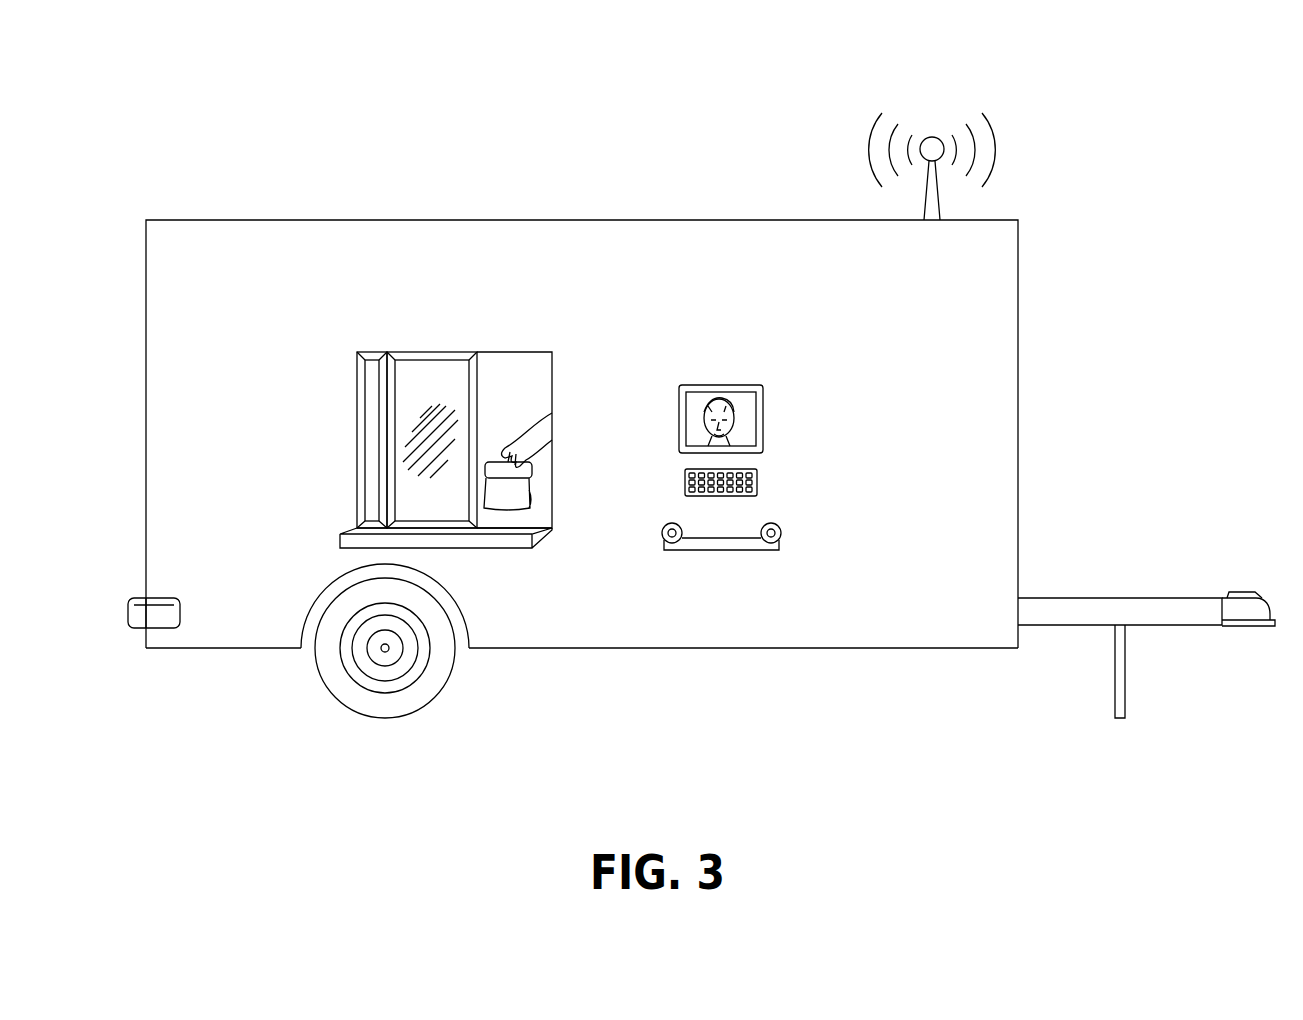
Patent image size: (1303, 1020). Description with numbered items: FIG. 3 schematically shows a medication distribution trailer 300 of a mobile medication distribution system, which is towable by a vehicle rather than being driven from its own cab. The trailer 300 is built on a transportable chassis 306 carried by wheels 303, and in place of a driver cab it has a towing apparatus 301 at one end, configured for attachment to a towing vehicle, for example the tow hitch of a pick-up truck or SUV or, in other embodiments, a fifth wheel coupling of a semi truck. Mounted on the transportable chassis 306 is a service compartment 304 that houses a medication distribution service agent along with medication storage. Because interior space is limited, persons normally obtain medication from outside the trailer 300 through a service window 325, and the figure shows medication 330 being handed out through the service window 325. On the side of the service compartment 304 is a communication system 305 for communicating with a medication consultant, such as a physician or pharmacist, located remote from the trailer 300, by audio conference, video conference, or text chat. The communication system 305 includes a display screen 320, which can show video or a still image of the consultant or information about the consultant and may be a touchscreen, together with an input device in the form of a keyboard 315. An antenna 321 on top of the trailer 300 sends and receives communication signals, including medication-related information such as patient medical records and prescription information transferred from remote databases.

The trailer 300 is at (665, 128).
The towing apparatus 301 is at (1168, 592).
The wheels 303 is at (386, 706).
The service compartment 304 is at (296, 246).
The communication system 305 is at (714, 371).
The transportable chassis 306 is at (642, 652).
The keyboard 315 is at (757, 482).
The display screen 320 is at (763, 418).
The antenna 321 is at (938, 205).
The service window 325 is at (422, 350).
The medication 330 is at (520, 492).